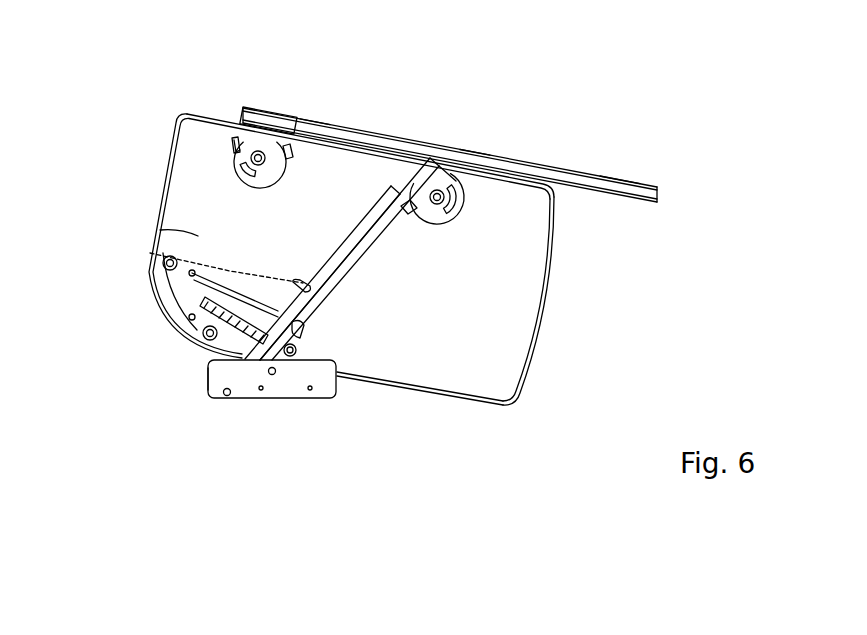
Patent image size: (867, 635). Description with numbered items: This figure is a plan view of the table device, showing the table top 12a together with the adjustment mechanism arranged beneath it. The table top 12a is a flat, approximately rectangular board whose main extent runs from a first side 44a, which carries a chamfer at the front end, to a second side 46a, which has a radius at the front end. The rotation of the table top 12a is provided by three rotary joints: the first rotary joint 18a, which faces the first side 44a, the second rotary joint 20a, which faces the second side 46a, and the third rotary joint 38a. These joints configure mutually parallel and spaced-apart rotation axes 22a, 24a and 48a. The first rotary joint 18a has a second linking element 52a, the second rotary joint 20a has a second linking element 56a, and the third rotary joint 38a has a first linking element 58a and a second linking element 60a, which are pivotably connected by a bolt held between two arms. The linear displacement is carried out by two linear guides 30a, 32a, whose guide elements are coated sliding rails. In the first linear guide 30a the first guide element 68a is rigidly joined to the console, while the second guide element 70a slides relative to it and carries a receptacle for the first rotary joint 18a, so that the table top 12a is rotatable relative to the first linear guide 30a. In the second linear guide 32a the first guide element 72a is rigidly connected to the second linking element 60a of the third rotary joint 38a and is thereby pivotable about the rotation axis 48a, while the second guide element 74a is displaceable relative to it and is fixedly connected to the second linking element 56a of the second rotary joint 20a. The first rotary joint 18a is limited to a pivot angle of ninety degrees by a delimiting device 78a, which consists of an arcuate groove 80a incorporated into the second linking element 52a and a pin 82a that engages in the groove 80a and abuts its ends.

The table top 12a is at (163, 232).
The first rotary joint 18a is at (283, 112).
The second rotary joint 20a is at (468, 209).
The rotation axis 22a is at (237, 133).
The rotation axis 24a is at (428, 156).
The first linear guide 30a is at (670, 202).
The second linear guide 32a is at (240, 342).
The third rotary joint 38a is at (229, 406).
The first side 44a is at (160, 205).
The second side 46a is at (548, 298).
The rotation axis 48a is at (224, 396).
The second linking element 52a is at (223, 133).
The second linking element 56a is at (472, 158).
The first linking element 58a is at (292, 382).
The second linking element 60a is at (200, 380).
The first guide element 68a is at (617, 185).
The second guide element 70a is at (296, 112).
The first guide element 72a is at (303, 300).
The second guide element 74a is at (360, 228).
The delimiting device 78a is at (215, 167).
The arcuate groove 80a is at (229, 187).
The pin 82a is at (308, 124).